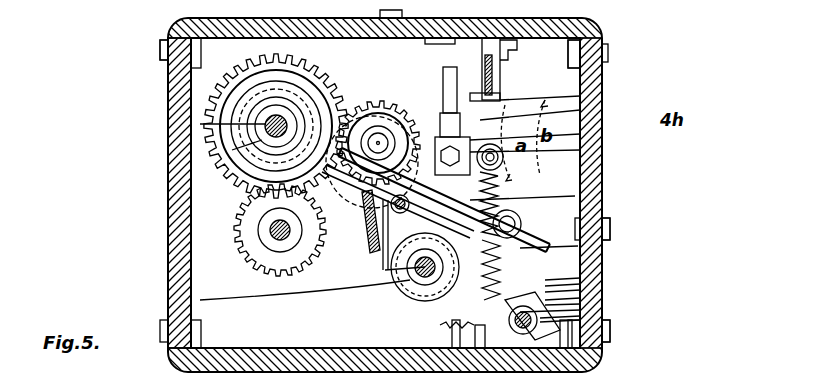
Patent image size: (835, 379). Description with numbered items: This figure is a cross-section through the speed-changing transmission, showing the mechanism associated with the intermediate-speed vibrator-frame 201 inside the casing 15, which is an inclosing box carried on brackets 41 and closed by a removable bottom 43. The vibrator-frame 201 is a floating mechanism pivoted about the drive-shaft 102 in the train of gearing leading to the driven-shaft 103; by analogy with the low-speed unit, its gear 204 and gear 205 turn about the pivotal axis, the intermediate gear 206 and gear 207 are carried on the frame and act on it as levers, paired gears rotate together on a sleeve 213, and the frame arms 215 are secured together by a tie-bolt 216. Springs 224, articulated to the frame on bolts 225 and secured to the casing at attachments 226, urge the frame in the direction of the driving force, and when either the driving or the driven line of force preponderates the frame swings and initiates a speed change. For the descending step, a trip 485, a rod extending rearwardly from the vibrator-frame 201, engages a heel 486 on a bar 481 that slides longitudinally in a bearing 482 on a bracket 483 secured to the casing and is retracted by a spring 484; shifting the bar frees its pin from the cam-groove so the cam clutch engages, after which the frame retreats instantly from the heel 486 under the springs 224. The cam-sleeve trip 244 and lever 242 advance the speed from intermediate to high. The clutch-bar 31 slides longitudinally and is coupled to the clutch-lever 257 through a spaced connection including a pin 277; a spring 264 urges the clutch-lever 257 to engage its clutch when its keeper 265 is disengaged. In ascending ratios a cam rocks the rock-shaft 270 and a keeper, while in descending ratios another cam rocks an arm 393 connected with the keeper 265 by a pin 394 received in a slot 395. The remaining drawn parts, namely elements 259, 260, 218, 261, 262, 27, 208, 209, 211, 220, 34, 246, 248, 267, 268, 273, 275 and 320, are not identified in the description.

The casing 15 is at (401, 186).
The main gear 259 is at (250, 95).
The gear 205 is at (225, 110).
The gear hub 260 is at (257, 118).
The drive-shaft 102 is at (266, 125).
The shaft key 220 is at (138, 107).
The gear 204 is at (262, 141).
The screw 218 is at (160, 50).
The arms 215 is at (405, 105).
The lower gear 261 is at (300, 163).
The lower gear shaft 262 is at (270, 230).
The drum 27 is at (385, 262).
The brackets 41 is at (440, 105).
The trip 485 is at (443, 75).
The heel 486 is at (428, 44).
The bearing 482 is at (564, 69).
The bracket 483 is at (579, 48).
The spring 484 is at (610, 44).
The bar 481 is at (545, 137).
The gear 206 is at (578, 83).
The gear 207 is at (567, 100).
The roller 209 is at (564, 158).
The lever 208 is at (561, 147).
The vibrator-frame 201 is at (562, 133).
The bolts 225 is at (564, 201).
The tie-bolt 216 is at (559, 193).
The lever 242 is at (342, 258).
The tab 246 is at (616, 227).
The pin 277 is at (635, 233).
The spring 264 is at (592, 252).
The springs 224 is at (562, 270).
The lever bar 211 is at (400, 255).
The sleeve 213 is at (400, 272).
The clutch-lever 257 is at (365, 205).
The driven-shaft 103 is at (383, 245).
The pivot 34 is at (396, 212).
The removable bottom 43 is at (178, 223).
The clutch-bar 31 is at (250, 295).
The rock-shaft 270 is at (611, 321).
The casing attachments 226 is at (625, 316).
The spring 320 is at (554, 327).
The cam-sleeve trip 244 is at (609, 337).
The screw 248 is at (652, 338).
The link 273 is at (621, 311).
The link 275 is at (649, 314).
The arm 393 is at (653, 305).
The slot 395 is at (640, 294).
The pin 394 is at (647, 283).
The keeper 265 is at (617, 277).
The link 267 is at (650, 267).
The link 268 is at (632, 260).